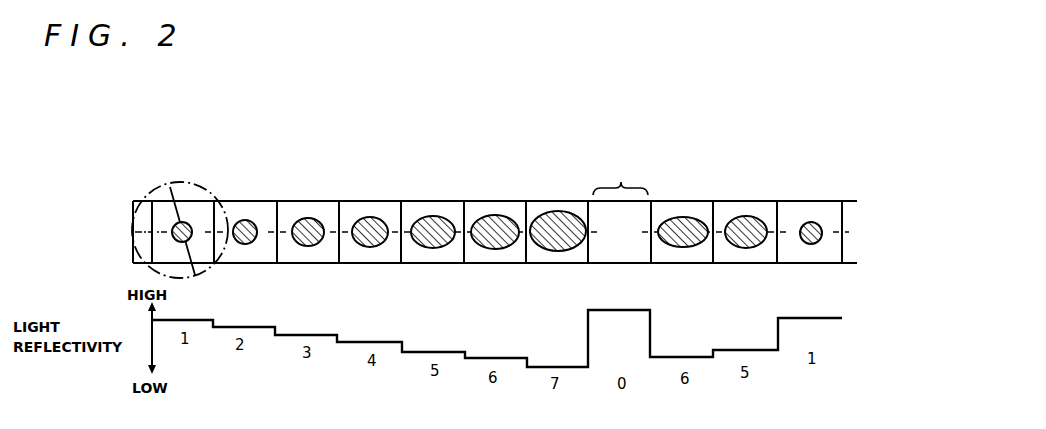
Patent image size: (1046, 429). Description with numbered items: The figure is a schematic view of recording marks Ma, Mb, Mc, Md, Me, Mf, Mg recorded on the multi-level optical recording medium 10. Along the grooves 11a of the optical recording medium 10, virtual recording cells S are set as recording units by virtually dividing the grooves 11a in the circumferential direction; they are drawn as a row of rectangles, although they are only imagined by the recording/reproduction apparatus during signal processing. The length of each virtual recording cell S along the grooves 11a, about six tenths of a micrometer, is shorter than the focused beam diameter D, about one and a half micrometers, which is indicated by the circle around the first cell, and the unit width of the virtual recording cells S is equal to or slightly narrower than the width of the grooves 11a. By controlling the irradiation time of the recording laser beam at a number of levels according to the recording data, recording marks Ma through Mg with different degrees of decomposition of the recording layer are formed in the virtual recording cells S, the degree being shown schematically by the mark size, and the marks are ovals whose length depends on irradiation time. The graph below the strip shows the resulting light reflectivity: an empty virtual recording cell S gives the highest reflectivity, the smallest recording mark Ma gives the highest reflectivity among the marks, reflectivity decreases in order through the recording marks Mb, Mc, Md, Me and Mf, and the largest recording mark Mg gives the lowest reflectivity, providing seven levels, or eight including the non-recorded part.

The optical recording medium 10 is at (448, 105).
The grooves 11a is at (852, 232).
The focused beam diameter D is at (169, 190).
The virtual recording cell S is at (622, 182).
The recording mark Ma is at (188, 215).
The recording mark Mb is at (243, 220).
The recording mark Mc is at (305, 219).
The recording mark Md is at (370, 217).
The recording mark Me is at (440, 217).
The recording mark Mf is at (497, 216).
The recording mark Mg is at (553, 212).